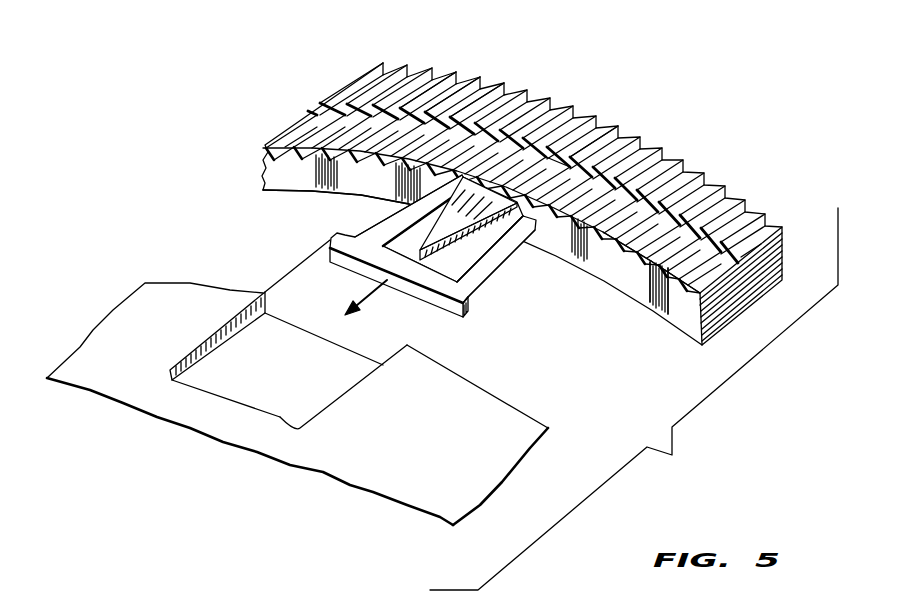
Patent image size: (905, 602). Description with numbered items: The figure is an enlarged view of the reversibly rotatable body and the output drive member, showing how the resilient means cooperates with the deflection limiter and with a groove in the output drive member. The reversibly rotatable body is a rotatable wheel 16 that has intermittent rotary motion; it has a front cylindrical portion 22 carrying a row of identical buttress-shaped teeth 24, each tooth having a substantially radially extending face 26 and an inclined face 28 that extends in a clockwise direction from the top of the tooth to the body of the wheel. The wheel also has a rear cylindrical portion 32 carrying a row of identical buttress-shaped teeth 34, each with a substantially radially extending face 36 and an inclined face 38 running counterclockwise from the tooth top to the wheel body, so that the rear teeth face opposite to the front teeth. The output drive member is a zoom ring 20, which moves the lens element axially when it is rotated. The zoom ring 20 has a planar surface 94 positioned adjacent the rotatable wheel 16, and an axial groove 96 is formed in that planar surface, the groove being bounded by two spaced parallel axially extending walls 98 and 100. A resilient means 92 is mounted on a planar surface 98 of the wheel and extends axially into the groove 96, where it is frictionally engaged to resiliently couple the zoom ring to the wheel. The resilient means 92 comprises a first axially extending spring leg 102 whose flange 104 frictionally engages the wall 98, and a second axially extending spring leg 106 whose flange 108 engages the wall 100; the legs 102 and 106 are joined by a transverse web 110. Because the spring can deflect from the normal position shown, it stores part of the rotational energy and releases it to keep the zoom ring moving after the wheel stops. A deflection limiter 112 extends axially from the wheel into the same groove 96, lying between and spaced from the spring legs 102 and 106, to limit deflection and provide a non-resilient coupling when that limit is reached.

The rotatable wheel 16 is at (690, 316).
The zoom ring 20 is at (363, 463).
The front cylindrical portion 22 is at (603, 262).
The buttress-shaped teeth 24 is at (552, 244).
The radially extending face 26 is at (652, 292).
The inclined face 28 is at (673, 282).
The rear cylindrical portion 32 is at (635, 135).
The buttress-shaped teeth 34 is at (505, 84).
The radially extending face 36 is at (472, 92).
The inclined face 38 is at (457, 83).
The resilient means 92 is at (497, 262).
The planar surface 94 is at (472, 374).
The axial groove 96 is at (275, 333).
The axially extending wall 98 is at (296, 168).
The axially extending wall 100 is at (243, 310).
The first axially extending spring leg 102 is at (517, 232).
The flange 104 is at (466, 318).
The second axially extending spring leg 106 is at (397, 220).
The flange 108 is at (330, 244).
The transverse web 110 is at (412, 272).
The deflection limiter 112 is at (455, 232).